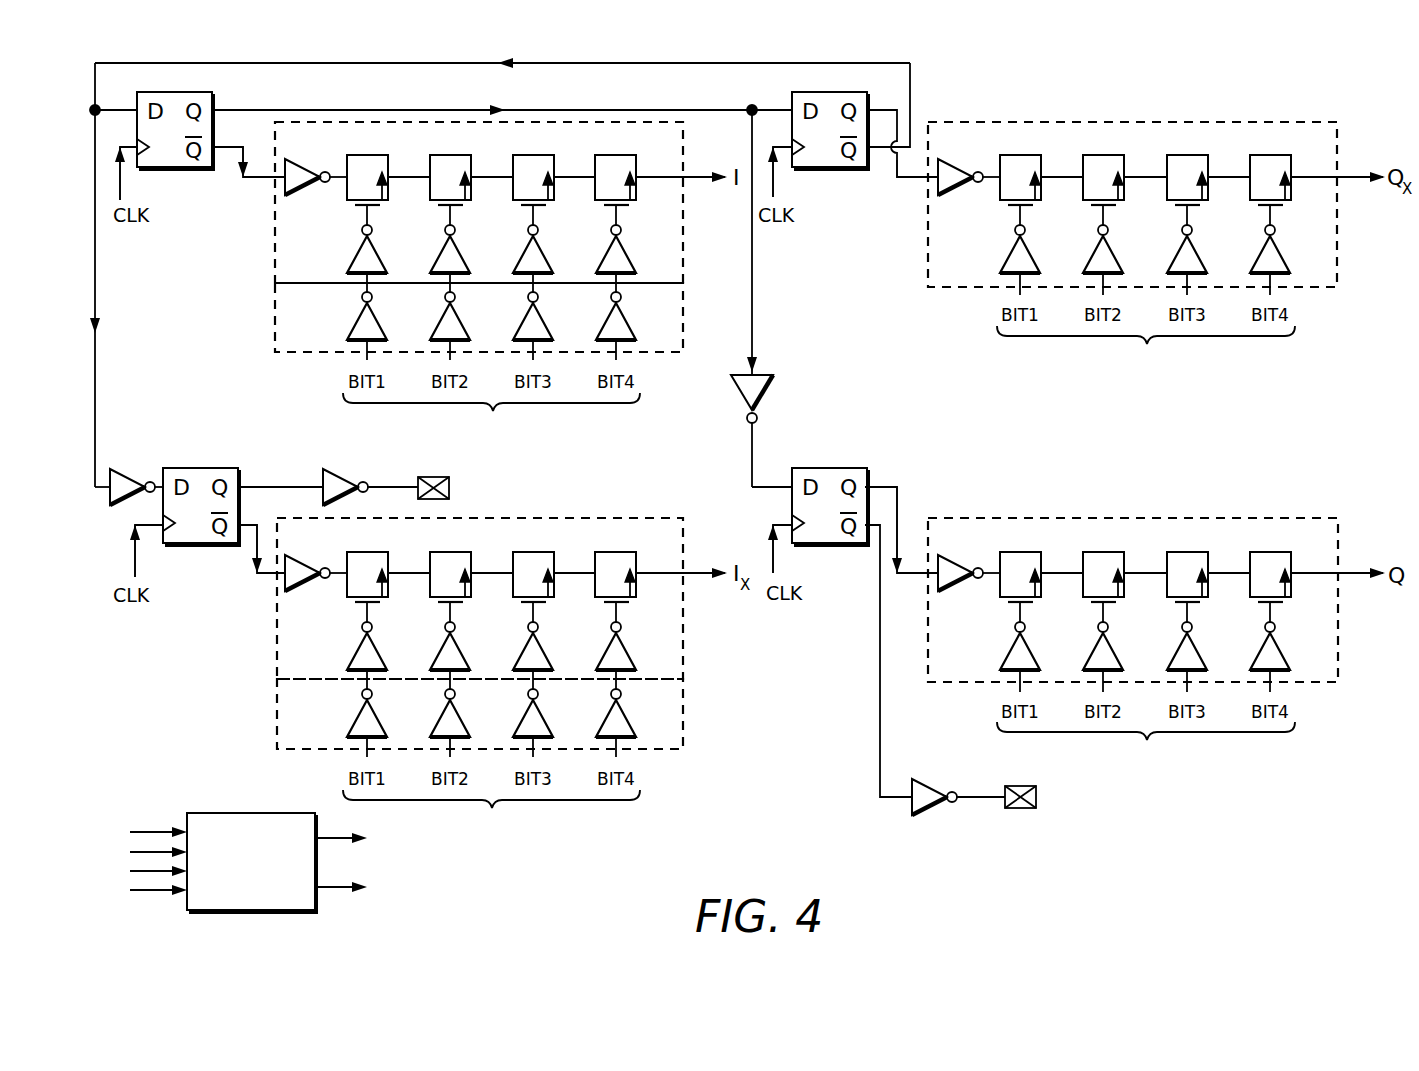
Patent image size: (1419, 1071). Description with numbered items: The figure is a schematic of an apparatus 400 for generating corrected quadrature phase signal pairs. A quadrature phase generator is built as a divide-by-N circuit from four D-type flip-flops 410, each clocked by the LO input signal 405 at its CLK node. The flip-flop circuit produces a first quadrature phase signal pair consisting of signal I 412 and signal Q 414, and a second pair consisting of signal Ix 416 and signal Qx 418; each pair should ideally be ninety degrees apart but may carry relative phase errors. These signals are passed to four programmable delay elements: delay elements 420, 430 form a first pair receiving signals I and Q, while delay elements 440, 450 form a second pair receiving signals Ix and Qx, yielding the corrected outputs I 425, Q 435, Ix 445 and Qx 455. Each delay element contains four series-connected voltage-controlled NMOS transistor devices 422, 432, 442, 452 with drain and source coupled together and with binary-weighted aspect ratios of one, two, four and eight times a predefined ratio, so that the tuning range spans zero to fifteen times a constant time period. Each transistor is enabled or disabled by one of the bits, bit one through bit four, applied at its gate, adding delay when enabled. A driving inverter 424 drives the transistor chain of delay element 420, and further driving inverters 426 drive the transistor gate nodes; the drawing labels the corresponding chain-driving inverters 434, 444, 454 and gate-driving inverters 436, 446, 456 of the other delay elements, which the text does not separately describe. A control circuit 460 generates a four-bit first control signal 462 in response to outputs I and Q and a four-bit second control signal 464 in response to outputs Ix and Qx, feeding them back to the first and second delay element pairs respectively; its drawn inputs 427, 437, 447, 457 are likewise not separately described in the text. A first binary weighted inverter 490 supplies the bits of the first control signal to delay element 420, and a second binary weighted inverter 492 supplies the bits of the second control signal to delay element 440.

The apparatus 400 is at (1284, 96).
The LO input signal 405 is at (121, 194).
The D-type flip-flop 410 is at (190, 92).
The signal I 412 is at (226, 150).
The signal Q 414 is at (895, 486).
The signal Ix 416 is at (262, 533).
The signal Qx 418 is at (909, 183).
The programmable delay element 420 is at (685, 212).
The NMOS transistor device 422 is at (366, 155).
The driving inverter 424 is at (306, 168).
The output I 425 is at (700, 174).
The driving inverters 426 is at (377, 252).
The control input 427 is at (166, 830).
The programmable delay element 430 is at (1328, 518).
The NMOS transistor device 432 is at (1019, 552).
The inverter 434 is at (962, 564).
The output Q 435 is at (1354, 571).
The control inverter 436 is at (1030, 649).
The control input 437 is at (132, 850).
The programmable delay element 440 is at (673, 518).
The NMOS transistor device 442 is at (366, 552).
The inverter 444 is at (306, 564).
The output Ix 445 is at (700, 571).
The control inverter 446 is at (377, 649).
The control input 447 is at (132, 872).
The programmable delay element 450 is at (1323, 122).
The NMOS transistor device 452 is at (1019, 155).
The inverter 454 is at (962, 168).
The output Qx 455 is at (1354, 174).
The control inverter 456 is at (1030, 252).
The control input 457 is at (166, 893).
The control circuit 460 is at (278, 814).
The first control signal 462 is at (338, 851).
The second control signal 464 is at (320, 887).
The first binary weighted inverter 490 is at (685, 316).
The second binary weighted inverter 492 is at (685, 713).